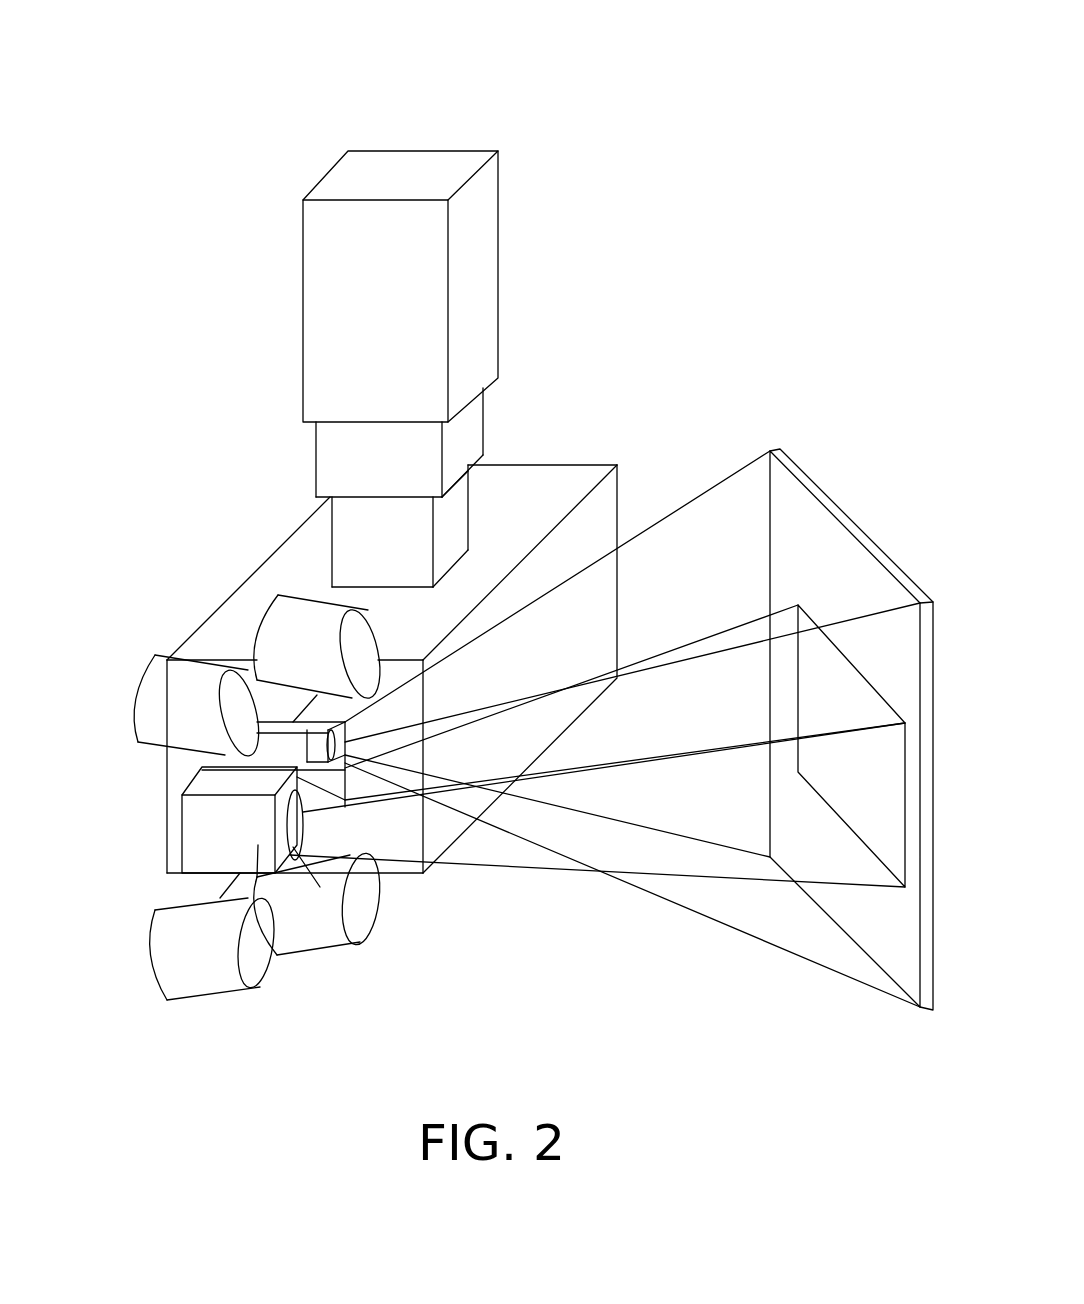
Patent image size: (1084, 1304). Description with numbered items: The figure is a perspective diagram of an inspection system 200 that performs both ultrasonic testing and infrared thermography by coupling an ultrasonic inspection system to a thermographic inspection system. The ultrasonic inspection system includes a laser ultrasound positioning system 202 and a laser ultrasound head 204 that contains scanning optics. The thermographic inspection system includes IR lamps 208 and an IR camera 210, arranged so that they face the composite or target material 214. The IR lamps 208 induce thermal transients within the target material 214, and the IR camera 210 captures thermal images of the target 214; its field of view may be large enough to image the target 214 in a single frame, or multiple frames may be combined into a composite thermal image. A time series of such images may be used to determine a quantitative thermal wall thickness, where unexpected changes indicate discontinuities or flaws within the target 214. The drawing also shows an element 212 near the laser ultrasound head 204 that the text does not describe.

The inspection system 200 is at (868, 40).
The laser ultrasound positioning system 202 is at (303, 199).
The laser ultrasound head 204 is at (183, 868).
The IR lamps 208 is at (274, 599).
The IR camera 210 is at (212, 770).
The lens 212 is at (292, 853).
The target material 214 is at (826, 502).